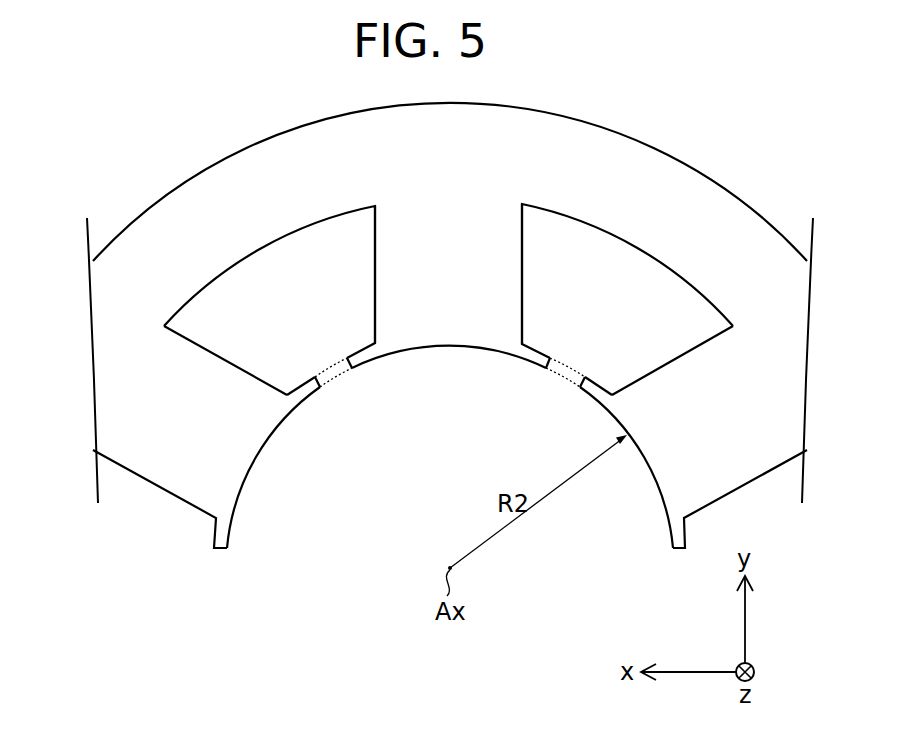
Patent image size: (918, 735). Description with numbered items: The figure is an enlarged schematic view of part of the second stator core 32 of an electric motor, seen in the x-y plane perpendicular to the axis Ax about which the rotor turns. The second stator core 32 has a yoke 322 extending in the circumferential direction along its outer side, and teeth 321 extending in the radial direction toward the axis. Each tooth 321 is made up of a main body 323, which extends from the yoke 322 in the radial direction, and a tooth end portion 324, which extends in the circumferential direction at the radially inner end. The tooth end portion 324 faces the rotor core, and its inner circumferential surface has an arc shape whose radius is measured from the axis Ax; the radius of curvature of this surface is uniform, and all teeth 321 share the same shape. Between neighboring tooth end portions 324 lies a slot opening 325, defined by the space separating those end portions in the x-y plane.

The second stator core 32 is at (456, 322).
The tooth 321 is at (363, 296).
The yoke 322 is at (310, 163).
The main body 323 is at (190, 398).
The tooth end portion 324 is at (447, 346).
The slot opening 325 is at (335, 364).